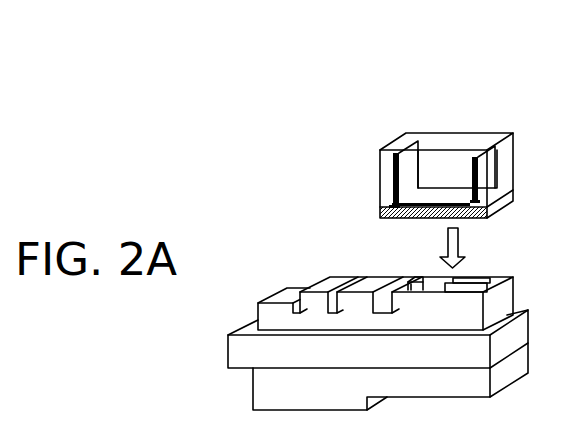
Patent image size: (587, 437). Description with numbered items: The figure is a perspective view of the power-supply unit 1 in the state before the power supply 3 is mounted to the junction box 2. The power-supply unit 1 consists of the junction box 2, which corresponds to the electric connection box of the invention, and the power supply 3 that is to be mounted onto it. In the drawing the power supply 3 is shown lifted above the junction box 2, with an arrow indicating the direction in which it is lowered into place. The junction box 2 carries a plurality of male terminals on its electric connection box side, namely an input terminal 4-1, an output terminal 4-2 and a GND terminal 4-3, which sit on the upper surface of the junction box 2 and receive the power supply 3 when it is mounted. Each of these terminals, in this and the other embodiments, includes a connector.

The power-supply unit 1 is at (380, 56).
The junction box 2 is at (236, 355).
The power supply 3 is at (451, 147).
The input terminal 4-1 is at (417, 278).
The output terminal 4-2 is at (487, 291).
The GND terminal 4-3 is at (492, 280).